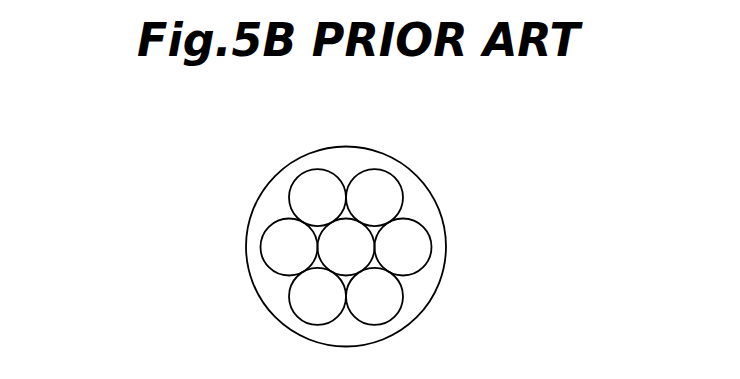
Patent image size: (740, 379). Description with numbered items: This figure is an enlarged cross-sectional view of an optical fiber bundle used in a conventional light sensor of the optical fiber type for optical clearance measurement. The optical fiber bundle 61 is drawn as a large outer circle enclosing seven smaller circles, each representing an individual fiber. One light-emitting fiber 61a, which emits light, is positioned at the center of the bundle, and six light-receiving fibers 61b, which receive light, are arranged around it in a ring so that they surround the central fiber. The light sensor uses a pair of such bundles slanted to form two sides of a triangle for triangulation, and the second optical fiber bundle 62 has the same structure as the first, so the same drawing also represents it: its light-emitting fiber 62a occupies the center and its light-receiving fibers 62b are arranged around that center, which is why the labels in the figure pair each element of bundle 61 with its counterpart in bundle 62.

The optical fiber bundle 61 is at (390, 231).
The optical fiber bundle 62 is at (402, 163).
The light-emitting fiber 61a is at (366, 185).
The light-emitting fiber 62a is at (342, 245).
The light-receiving fibers 61b is at (347, 247).
The light-receiving fibers 62b is at (310, 197).